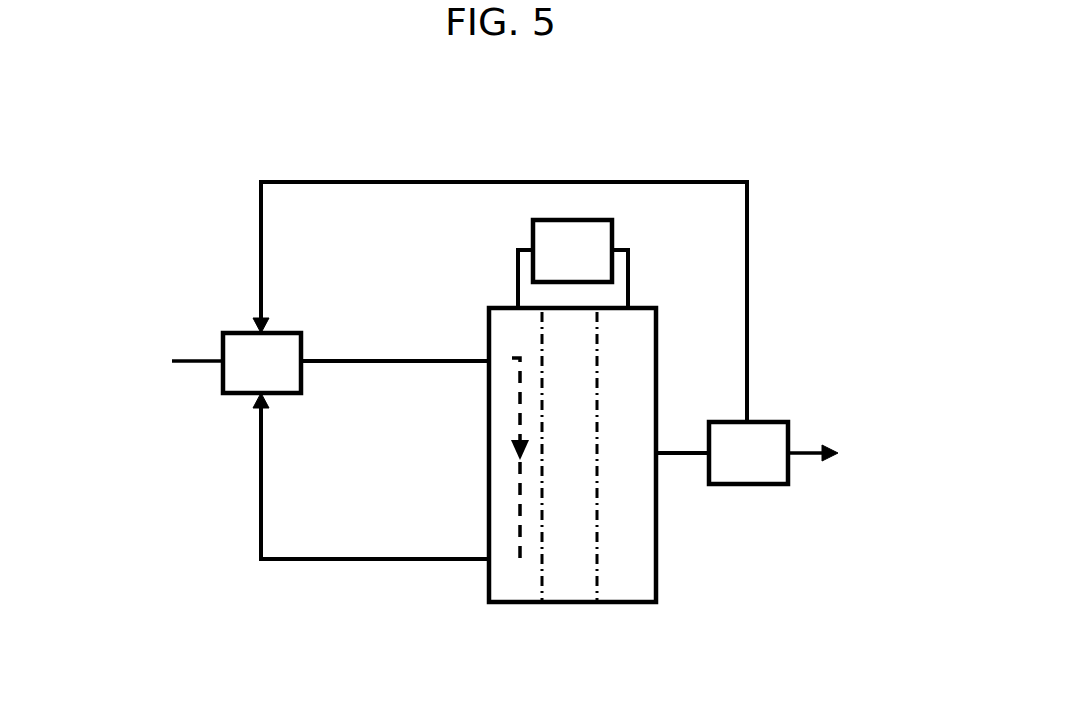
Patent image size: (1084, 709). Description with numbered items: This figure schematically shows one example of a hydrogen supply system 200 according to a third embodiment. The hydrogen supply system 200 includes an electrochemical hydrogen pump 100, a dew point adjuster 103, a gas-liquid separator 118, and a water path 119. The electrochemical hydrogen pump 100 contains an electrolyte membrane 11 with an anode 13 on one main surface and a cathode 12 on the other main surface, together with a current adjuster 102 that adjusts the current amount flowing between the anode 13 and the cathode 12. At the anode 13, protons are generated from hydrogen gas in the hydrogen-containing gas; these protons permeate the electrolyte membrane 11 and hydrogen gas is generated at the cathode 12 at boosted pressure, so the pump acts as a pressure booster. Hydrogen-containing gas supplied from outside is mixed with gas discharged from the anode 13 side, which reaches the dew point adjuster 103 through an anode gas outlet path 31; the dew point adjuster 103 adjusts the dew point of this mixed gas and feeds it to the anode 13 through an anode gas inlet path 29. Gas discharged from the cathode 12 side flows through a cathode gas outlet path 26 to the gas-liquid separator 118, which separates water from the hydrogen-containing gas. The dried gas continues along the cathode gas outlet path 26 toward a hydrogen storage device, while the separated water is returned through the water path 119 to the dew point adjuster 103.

The hydrogen supply system 200 is at (431, 87).
The water path 119 is at (498, 181).
The electrochemical hydrogen pump 100 is at (647, 296).
The current adjuster 102 is at (599, 268).
The dew point adjuster 103 is at (288, 380).
The anode gas inlet path 29 is at (380, 360).
The anode gas outlet path 31 is at (391, 563).
The anode 13 is at (537, 345).
The electrolyte membrane 11 is at (590, 345).
The cathode 12 is at (642, 345).
The cathode gas outlet path 26 is at (688, 449).
The gas-liquid separator 118 is at (776, 470).